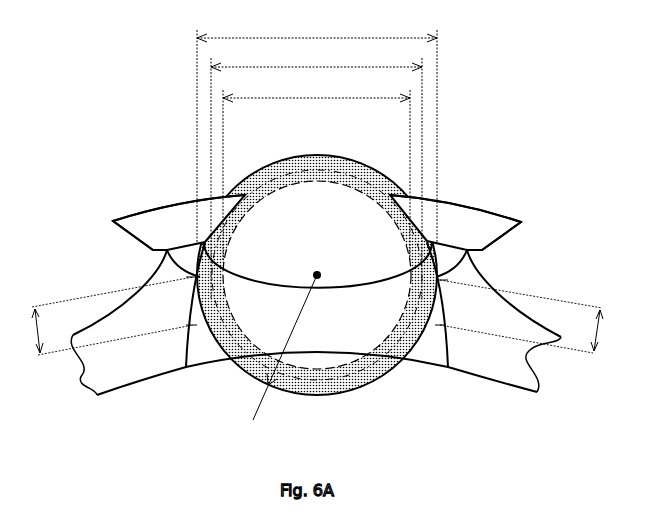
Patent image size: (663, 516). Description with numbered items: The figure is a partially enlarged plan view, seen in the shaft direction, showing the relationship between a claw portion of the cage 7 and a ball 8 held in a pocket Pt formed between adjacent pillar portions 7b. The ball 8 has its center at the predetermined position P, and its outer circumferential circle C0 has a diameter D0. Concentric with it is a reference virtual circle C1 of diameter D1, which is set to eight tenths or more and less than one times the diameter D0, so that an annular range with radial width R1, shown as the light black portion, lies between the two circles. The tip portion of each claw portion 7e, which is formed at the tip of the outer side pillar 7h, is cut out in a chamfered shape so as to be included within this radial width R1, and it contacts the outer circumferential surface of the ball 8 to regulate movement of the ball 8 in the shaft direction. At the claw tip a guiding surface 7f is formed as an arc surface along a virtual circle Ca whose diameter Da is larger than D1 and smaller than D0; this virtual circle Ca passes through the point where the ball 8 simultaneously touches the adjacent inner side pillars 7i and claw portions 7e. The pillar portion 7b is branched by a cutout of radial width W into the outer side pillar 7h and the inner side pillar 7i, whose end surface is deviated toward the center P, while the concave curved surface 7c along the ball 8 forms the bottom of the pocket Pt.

The cage 7 is at (289, 272).
The pillar portion 7b is at (317, 206).
The concave curved surface 7c is at (342, 287).
The claw portion 7e is at (125, 220).
The guiding surface 7f is at (131, 238).
The outer side pillar 7h is at (174, 264).
The inner side pillar 7i is at (203, 358).
The ball 8 is at (355, 163).
The predetermined position P is at (315, 272).
The pocket Pt is at (299, 191).
The radial width R1 is at (253, 422).
The outer circumferential circle C0 is at (368, 394).
The virtual circle Ca is at (338, 389).
The reference virtual circle C1 is at (312, 387).
The diameter of the outer circumferential circle D0 is at (317, 128).
The diameter of the virtual circle Da is at (316, 171).
The diameter of the reference virtual circle D1 is at (316, 167).
The radial width of the slit portion W is at (315, 316).